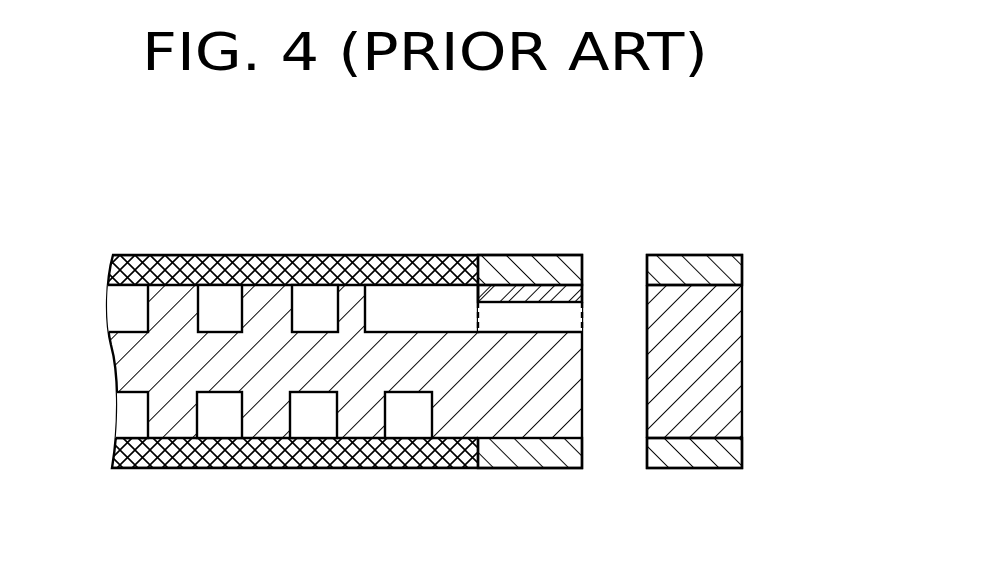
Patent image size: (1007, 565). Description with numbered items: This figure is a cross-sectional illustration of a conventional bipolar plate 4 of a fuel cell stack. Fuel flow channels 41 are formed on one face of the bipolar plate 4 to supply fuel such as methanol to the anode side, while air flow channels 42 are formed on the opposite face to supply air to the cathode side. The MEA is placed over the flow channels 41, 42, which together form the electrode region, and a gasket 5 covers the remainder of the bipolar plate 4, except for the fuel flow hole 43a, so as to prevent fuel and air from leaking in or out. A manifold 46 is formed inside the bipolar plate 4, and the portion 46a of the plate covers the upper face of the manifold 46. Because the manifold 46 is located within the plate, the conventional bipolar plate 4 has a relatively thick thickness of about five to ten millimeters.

The bipolar plate 4 is at (122, 360).
The gasket 5 is at (535, 257).
The fuel flow channels 41 is at (375, 298).
The air flow channels 42 is at (200, 422).
The manifold 46 is at (495, 313).
The portion covering upper face of manifold 46a is at (565, 293).
The fuel flow hole 43a is at (647, 328).
The membrane electrode assembly MEA is at (387, 258).